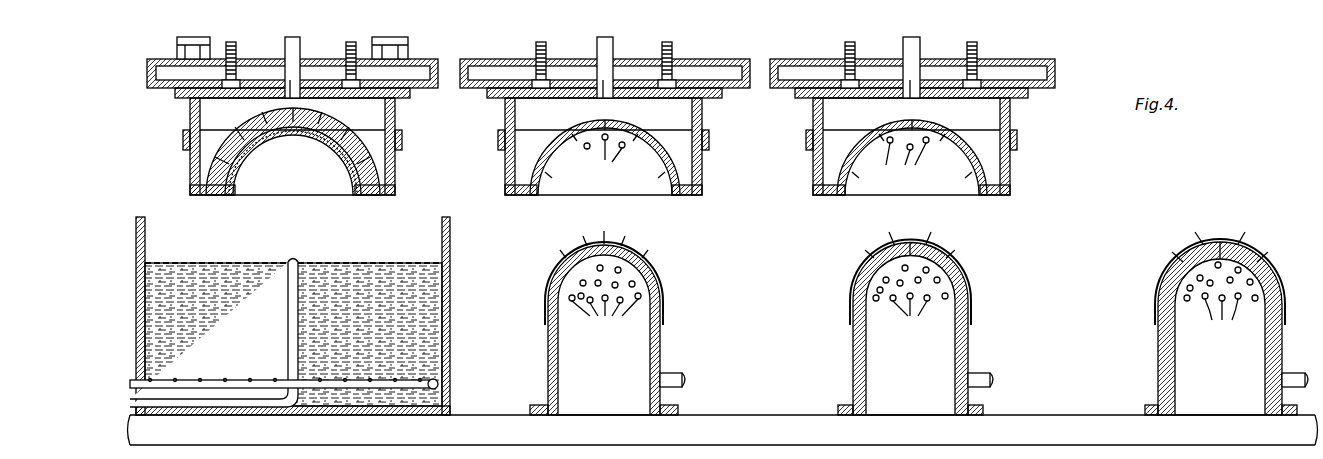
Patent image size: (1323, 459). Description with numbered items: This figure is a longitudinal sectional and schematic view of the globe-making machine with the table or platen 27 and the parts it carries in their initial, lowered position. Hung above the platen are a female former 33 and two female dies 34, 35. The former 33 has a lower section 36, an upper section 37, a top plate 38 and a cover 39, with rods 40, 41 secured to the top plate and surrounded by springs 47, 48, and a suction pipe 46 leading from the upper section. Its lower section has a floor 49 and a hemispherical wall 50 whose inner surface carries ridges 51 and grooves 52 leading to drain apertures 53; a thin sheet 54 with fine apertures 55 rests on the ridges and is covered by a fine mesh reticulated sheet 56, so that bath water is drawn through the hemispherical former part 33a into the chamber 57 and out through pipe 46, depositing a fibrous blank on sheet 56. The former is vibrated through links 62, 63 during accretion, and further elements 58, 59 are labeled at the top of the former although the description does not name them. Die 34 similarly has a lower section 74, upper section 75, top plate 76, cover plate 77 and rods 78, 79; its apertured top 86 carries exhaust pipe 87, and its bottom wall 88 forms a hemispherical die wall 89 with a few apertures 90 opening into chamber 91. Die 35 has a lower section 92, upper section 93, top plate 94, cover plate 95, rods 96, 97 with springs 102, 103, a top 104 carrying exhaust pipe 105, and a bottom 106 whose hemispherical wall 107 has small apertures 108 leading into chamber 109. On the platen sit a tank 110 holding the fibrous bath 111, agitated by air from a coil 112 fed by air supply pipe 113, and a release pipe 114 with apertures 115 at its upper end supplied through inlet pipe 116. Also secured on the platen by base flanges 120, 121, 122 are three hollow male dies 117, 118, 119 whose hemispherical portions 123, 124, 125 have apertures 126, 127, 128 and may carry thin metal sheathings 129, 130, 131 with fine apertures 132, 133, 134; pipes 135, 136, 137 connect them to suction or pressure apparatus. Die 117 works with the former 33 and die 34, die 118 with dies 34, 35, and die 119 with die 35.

The table or platen 27 is at (786, 415).
The former 33 is at (395, 168).
The hemispherical former part 33a is at (375, 152).
The die 34 is at (705, 163).
The die 35 is at (1012, 150).
The lower section 36 is at (190, 178).
The upper section 37 is at (395, 104).
The top plate 38 is at (160, 88).
The cover 39 is at (438, 70).
The rod 40 is at (236, 46).
The rod 41 is at (346, 48).
The suction pipe 46 is at (285, 76).
The spring 47 is at (226, 72).
The spring 48 is at (360, 72).
The bottom wall or floor 49 is at (385, 192).
The hemispherical wall 50 is at (222, 137).
The ridge 51 is at (240, 135).
The groove 52 is at (310, 130).
The drain aperture 53 is at (318, 128).
The hemispherical thin sheet 54 is at (238, 188).
The aperture 55 is at (238, 165).
The fine mesh reticulated sheet 56 is at (350, 180).
The chamber 57 is at (225, 116).
The bolt 58 is at (190, 40).
The plate end 59 is at (470, 48).
The link 62 is at (178, 50).
The link 63 is at (408, 42).
The lower section 74 is at (709, 145).
The upper section 75 is at (706, 108).
The top plate 76 is at (736, 88).
The cover plate 77 is at (716, 60).
The rod 78 is at (546, 44).
The rod 79 is at (672, 44).
The apertured top 86 is at (645, 98).
The suction or exhaust pipe 87 is at (613, 50).
The bottom wall 88 is at (680, 190).
The hemispherical die wall 89 is at (655, 160).
The aperture 90 is at (612, 162).
The chamber 91 is at (528, 115).
The lower section 92 is at (1012, 177).
The upper section 93 is at (1012, 108).
The top plate 94 is at (1048, 88).
The cover plate 95 is at (1045, 60).
The rod 96 is at (855, 48).
The rod 97 is at (960, 66).
The spring 102 is at (845, 48).
The spring 103 is at (977, 46).
The top 104 is at (950, 98).
The suction or exhaust pipe 105 is at (920, 50).
The bottom 106 is at (988, 190).
The hemispherical wall 107 is at (968, 175).
The aperture 108 is at (900, 168).
The chamber 109 is at (838, 140).
The vat or tank 110 is at (450, 315).
The fibrous bath 111 is at (430, 292).
The coil 112 is at (440, 378).
The air supply pipe 113 is at (150, 380).
The release pipe 114 is at (290, 318).
The aperture 115 is at (290, 258).
The inlet or air supply pipe 116 is at (155, 403).
The male die 117 is at (660, 345).
The male die 118 is at (968, 345).
The male die 119 is at (1270, 338).
The base flange 120 is at (678, 405).
The base flange 121 is at (983, 405).
The base flange 122 is at (1150, 405).
The hemispherical portion 123 is at (655, 272).
The hemispherical portion 124 is at (962, 278).
The hemispherical portion 125 is at (1270, 268).
The aperture 126 is at (610, 248).
The aperture 127 is at (940, 272).
The aperture 128 is at (1260, 266).
The thin metal sheathing 129 is at (663, 292).
The thin metal sheathing 130 is at (971, 292).
The thin metal sheathing 131 is at (1285, 292).
The fine aperture 132 is at (568, 260).
The fine aperture 133 is at (866, 270).
The fine aperture 134 is at (1164, 272).
The pipe 135 is at (680, 373).
The pipe 136 is at (990, 373).
The pipe 137 is at (1294, 373).